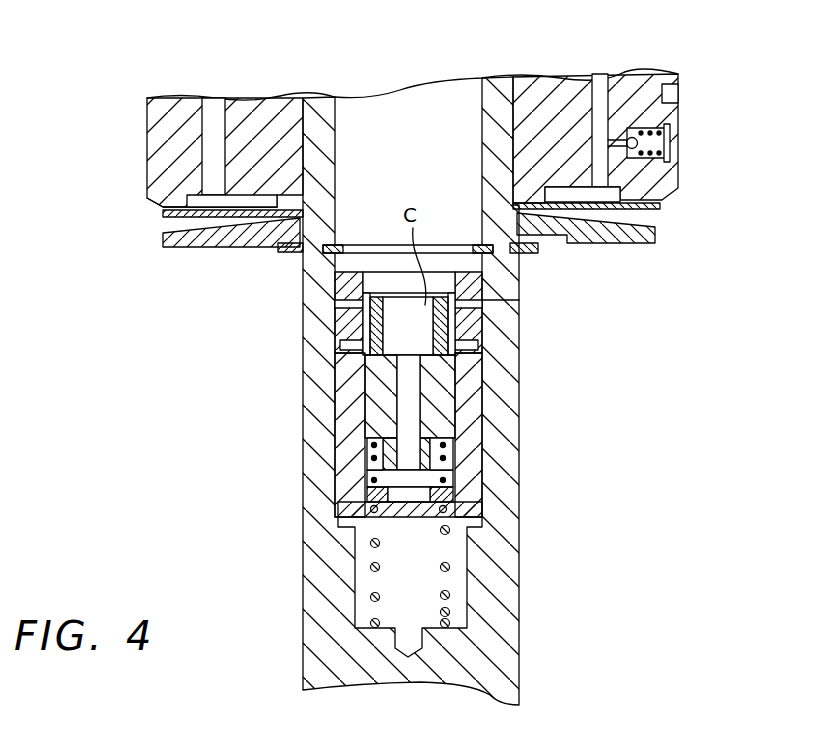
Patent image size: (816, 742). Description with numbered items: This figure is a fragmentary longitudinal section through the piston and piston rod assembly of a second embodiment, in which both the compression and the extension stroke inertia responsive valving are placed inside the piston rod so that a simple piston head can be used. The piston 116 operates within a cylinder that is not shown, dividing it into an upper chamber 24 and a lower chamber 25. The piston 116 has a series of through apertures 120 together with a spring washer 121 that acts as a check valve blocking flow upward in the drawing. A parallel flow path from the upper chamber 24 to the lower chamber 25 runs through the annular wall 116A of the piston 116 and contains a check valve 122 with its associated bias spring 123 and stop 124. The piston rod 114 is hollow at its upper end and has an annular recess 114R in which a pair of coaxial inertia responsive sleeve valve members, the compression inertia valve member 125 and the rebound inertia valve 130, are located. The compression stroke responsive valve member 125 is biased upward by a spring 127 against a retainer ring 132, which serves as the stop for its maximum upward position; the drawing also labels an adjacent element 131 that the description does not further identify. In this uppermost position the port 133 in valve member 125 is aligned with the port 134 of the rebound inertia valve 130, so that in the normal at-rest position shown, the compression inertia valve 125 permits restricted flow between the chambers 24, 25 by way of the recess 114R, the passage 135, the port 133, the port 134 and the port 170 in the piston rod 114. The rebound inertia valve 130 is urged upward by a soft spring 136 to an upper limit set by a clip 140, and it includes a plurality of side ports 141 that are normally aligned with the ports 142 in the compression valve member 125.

The piston rod 114 is at (520, 502).
The annular recess 114R is at (450, 95).
The piston 116 is at (147, 143).
The annular wall 116A is at (147, 180).
The through apertures 120 is at (210, 115).
The spring washer 121 is at (165, 220).
The check valve 122 is at (657, 207).
The bias spring 123 is at (642, 153).
The stop 124 is at (672, 140).
The compression inertia valve member 125 is at (372, 402).
The spring 127 is at (365, 490).
The rebound inertia valve 130 is at (365, 472).
The spring pocket 131 is at (372, 447).
The retainer ring 132 is at (375, 272).
The port 133 is at (360, 325).
The port 134 is at (355, 300).
The passage 135 is at (395, 300).
The soft spring 136 is at (375, 568).
The clip 140 is at (468, 242).
The side ports 141 is at (345, 372).
The ports 142 is at (408, 326).
The port 170 is at (505, 312).
The upper chamber 24 is at (398, 44).
The lower chamber 25 is at (148, 376).